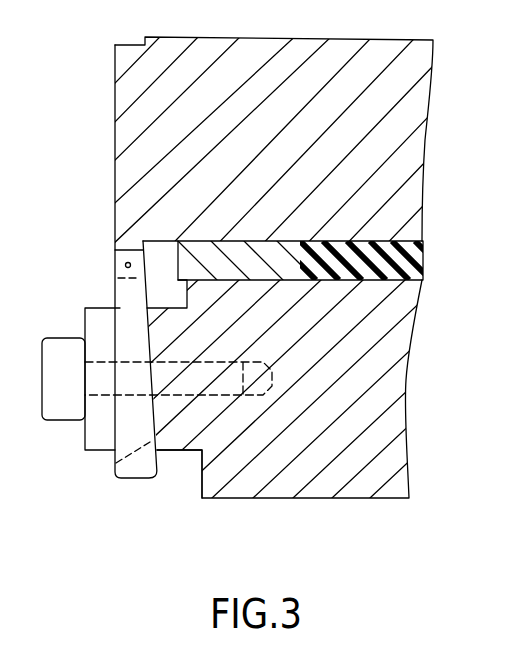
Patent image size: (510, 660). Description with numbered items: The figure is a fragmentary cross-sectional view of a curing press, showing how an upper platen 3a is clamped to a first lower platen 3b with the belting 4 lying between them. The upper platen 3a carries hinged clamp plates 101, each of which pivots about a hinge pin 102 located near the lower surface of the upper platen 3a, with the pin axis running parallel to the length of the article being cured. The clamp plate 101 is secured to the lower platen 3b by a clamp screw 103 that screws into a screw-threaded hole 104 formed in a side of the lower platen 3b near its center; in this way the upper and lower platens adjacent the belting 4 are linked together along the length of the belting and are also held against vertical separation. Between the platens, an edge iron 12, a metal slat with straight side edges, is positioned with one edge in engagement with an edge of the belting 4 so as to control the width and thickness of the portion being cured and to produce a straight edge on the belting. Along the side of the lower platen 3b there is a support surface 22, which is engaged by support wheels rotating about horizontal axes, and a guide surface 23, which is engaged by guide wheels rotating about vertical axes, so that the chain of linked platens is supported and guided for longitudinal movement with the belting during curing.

The upper platen 3a is at (122, 132).
The first lower platen 3b is at (317, 494).
The belting 4 is at (418, 267).
The edge iron 12 is at (172, 241).
The support surface 22 is at (173, 452).
The guide surface 23 is at (200, 466).
The hinged clamp plate 101 is at (123, 296).
The hinge pin 102 is at (125, 265).
The clamp screw 103 is at (66, 345).
The screw-threaded hole 104 is at (106, 463).